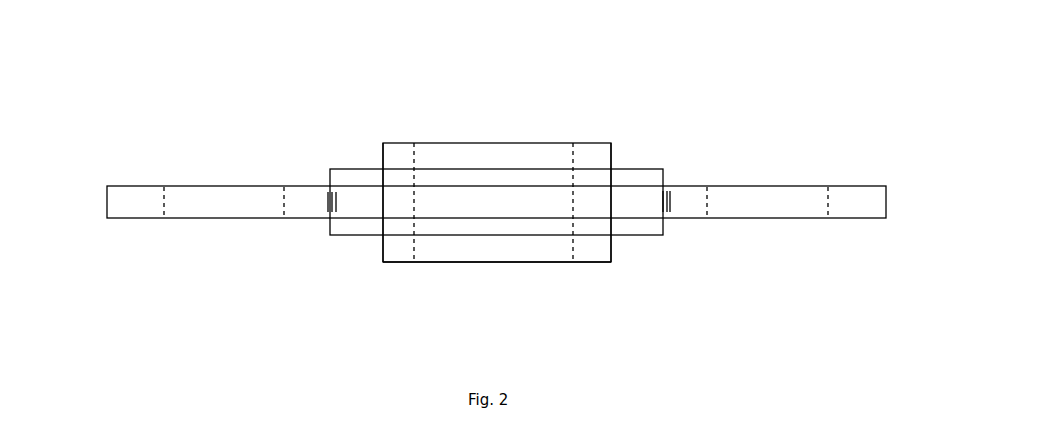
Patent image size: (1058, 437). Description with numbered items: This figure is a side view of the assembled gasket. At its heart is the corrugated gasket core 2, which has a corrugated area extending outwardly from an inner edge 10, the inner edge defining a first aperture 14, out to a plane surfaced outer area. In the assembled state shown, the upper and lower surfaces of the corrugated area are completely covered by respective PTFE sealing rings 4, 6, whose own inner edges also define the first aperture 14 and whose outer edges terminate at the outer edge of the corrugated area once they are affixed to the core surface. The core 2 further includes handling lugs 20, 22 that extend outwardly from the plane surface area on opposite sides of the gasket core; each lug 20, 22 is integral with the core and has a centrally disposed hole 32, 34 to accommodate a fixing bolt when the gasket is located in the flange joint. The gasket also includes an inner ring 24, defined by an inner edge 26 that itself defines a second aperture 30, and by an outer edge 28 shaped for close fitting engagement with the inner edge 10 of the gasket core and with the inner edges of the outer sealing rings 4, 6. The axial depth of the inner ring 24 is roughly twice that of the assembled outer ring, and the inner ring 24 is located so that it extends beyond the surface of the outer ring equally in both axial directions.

The corrugated gasket core 2 is at (861, 222).
The PTFE sealing ring 4 is at (357, 175).
The PTFE sealing ring 6 is at (332, 229).
The inner edge 10 is at (382, 200).
The first aperture 14 is at (603, 205).
The handling lug 20 is at (847, 202).
The handling lug 22 is at (133, 197).
The inner ring 24 is at (404, 143).
The inner edge 26 is at (417, 169).
The outer edge 28 is at (381, 143).
The second aperture 30 is at (430, 278).
The hole 32 is at (763, 185).
The hole 34 is at (232, 185).